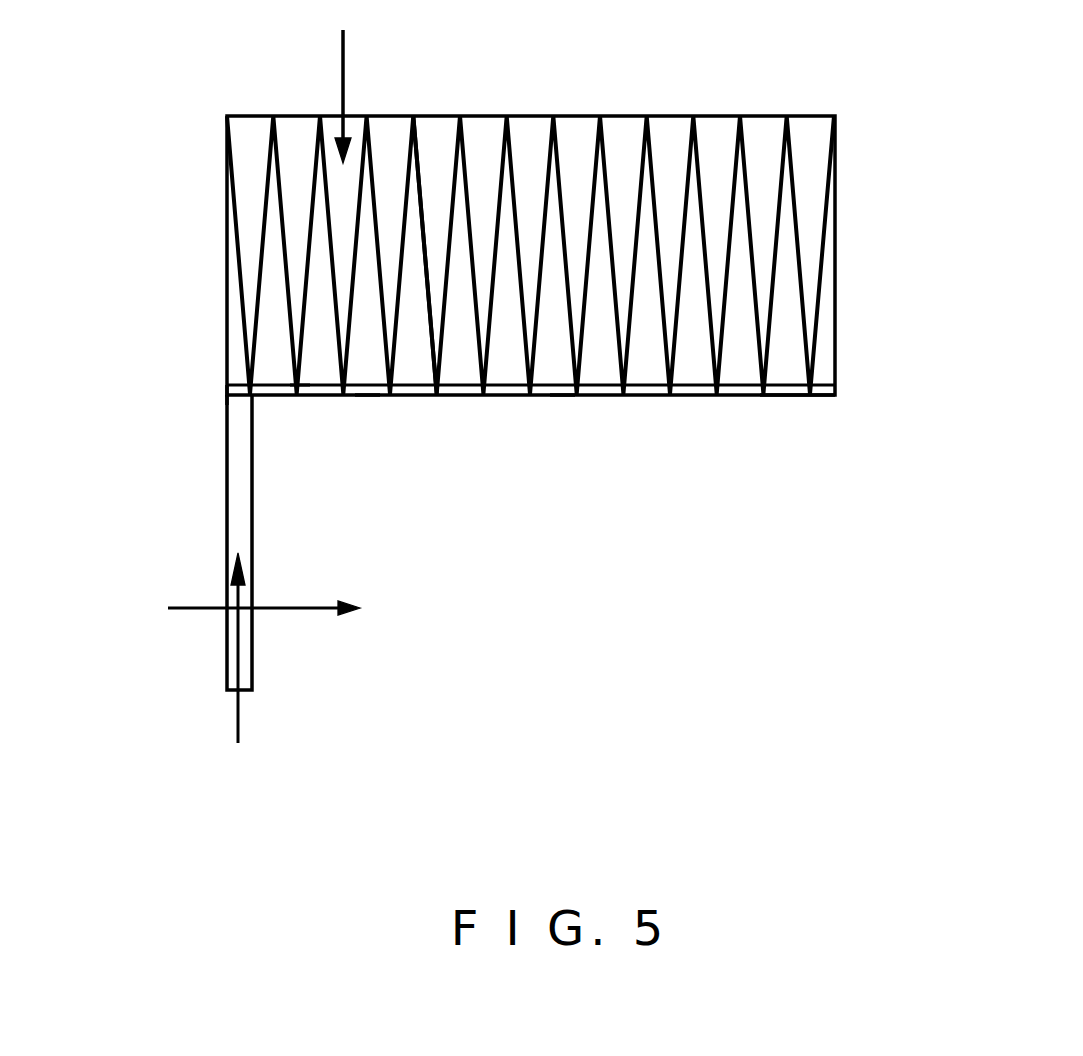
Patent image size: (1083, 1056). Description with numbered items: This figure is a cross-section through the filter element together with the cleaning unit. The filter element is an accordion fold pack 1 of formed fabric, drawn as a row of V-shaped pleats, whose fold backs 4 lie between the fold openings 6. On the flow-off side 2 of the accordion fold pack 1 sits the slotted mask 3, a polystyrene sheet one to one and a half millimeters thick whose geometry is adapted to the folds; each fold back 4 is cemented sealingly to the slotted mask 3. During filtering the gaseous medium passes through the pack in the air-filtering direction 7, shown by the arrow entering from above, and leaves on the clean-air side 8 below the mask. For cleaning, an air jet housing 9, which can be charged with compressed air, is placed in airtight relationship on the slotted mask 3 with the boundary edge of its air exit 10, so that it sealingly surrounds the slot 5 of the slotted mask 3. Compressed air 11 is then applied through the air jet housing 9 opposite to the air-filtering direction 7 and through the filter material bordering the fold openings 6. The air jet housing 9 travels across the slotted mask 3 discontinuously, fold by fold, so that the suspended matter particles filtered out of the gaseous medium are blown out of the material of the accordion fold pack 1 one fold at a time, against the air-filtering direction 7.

The accordion fold pack 1 is at (762, 130).
The flow-off side 2 is at (783, 481).
The slotted mask 3 is at (563, 397).
The fold backs 4 is at (306, 397).
The slot 5 is at (368, 397).
The fold openings 6 is at (412, 355).
The air-filtering direction 7 is at (344, 68).
The clean-air side 8 is at (533, 597).
The air jet housing 9 is at (232, 503).
The air exit 10 is at (240, 397).
The compressed air 11 is at (239, 718).